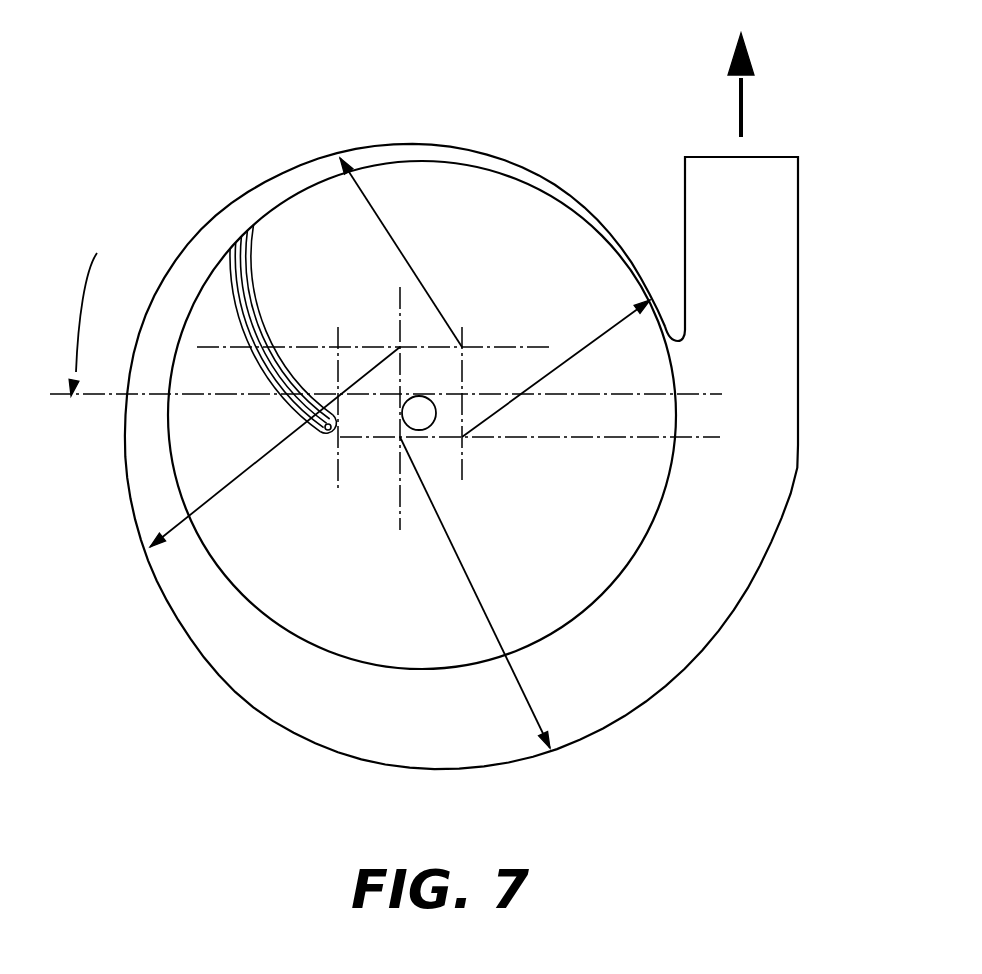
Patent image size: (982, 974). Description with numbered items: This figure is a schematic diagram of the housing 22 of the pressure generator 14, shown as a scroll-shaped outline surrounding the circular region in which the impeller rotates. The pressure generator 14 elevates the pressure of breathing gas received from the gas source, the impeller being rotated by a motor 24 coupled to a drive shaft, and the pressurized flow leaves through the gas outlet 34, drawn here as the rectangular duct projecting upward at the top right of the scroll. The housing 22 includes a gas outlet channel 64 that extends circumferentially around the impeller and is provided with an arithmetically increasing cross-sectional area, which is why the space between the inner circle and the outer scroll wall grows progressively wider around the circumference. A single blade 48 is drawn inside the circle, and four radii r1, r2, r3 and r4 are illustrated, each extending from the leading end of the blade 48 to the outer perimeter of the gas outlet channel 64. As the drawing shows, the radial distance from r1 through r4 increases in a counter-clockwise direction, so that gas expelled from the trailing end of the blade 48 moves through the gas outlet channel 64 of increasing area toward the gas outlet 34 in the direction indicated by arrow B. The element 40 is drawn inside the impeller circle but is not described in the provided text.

The pressure generator 14 is at (198, 160).
The housing 22 is at (236, 740).
The motor 24 is at (772, 542).
The gas outlet 34 is at (765, 157).
The impeller 40 is at (533, 506).
The blade 48 is at (262, 325).
The gas outlet channel 64 is at (527, 172).
The arrow B is at (69, 324).
The first radius r1 is at (600, 336).
The second radius r2 is at (381, 219).
The third radius r3 is at (233, 481).
The fourth radius r4 is at (452, 545).